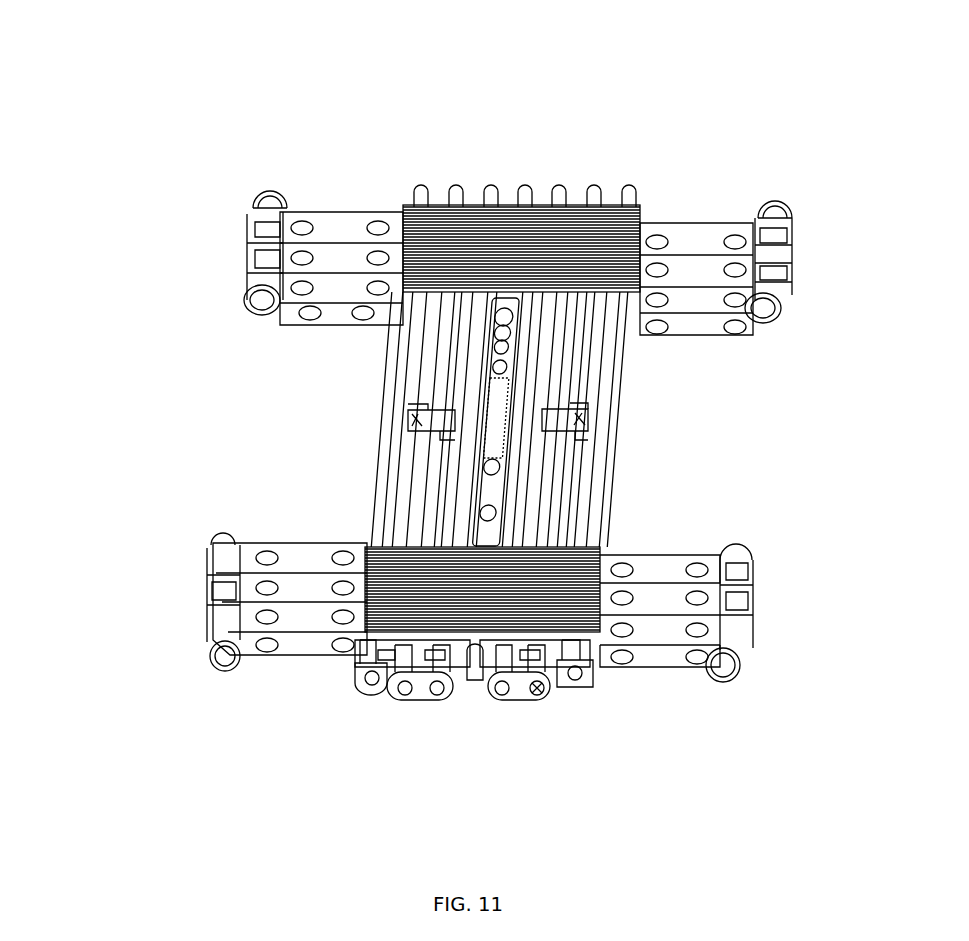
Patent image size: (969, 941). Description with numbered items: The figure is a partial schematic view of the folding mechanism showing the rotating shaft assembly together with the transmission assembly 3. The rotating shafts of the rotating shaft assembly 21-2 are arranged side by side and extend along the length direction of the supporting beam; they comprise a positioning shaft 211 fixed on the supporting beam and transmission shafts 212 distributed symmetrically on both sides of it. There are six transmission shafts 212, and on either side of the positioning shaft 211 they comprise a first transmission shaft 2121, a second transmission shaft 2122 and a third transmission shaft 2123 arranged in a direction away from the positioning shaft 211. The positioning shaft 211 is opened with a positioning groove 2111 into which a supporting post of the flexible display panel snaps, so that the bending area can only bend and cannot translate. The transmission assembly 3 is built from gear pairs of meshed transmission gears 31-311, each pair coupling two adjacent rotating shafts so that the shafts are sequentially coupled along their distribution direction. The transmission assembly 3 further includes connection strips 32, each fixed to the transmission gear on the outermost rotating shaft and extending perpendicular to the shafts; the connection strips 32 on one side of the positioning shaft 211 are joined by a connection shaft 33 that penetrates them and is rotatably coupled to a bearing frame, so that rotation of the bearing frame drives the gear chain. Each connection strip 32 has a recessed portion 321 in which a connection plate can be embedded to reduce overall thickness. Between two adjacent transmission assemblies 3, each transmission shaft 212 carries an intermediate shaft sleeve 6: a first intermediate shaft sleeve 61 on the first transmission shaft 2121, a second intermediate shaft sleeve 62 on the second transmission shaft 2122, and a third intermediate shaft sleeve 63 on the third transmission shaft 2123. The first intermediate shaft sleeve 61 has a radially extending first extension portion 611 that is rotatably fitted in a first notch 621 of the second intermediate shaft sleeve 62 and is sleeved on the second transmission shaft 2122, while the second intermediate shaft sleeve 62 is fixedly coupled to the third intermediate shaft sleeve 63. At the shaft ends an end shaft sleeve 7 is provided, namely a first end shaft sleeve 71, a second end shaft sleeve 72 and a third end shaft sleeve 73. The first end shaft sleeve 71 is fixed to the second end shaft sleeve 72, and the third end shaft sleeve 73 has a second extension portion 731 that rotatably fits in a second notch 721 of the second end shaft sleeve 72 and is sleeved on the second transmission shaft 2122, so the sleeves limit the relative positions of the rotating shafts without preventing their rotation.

The rotating shafts of rotating shaft assembly 21-2 is at (479, 275).
The transmission shafts 212 is at (451, 158).
The first transmission shaft 2121 is at (494, 194).
The second transmission shaft 2122 is at (448, 193).
The third transmission shaft 2123 is at (418, 193).
The positioning shaft 211 is at (584, 317).
The positioning groove 2111 is at (500, 398).
The gear pairs with transmission gears 31-311 is at (435, 272).
The intermediate shaft sleeve 6 is at (353, 419).
The first intermediate shaft sleeve 61 is at (460, 510).
The second intermediate shaft sleeve 62 is at (420, 530).
The third intermediate shaft sleeve 63 is at (388, 477).
The first extension portion 611 is at (422, 412).
The first notch 621 is at (410, 424).
The transmission assembly 3 is at (526, 618).
The recessed portion 321 is at (678, 540).
The connection strip 32 is at (655, 660).
The connection shaft 33 is at (730, 655).
The end shaft sleeve 7 is at (396, 747).
The first end shaft sleeve 71 is at (452, 700).
The second end shaft sleeve 72 is at (404, 705).
The third end shaft sleeve 73 is at (362, 705).
The second notch 721 is at (540, 690).
The second extension portion 731 is at (425, 650).